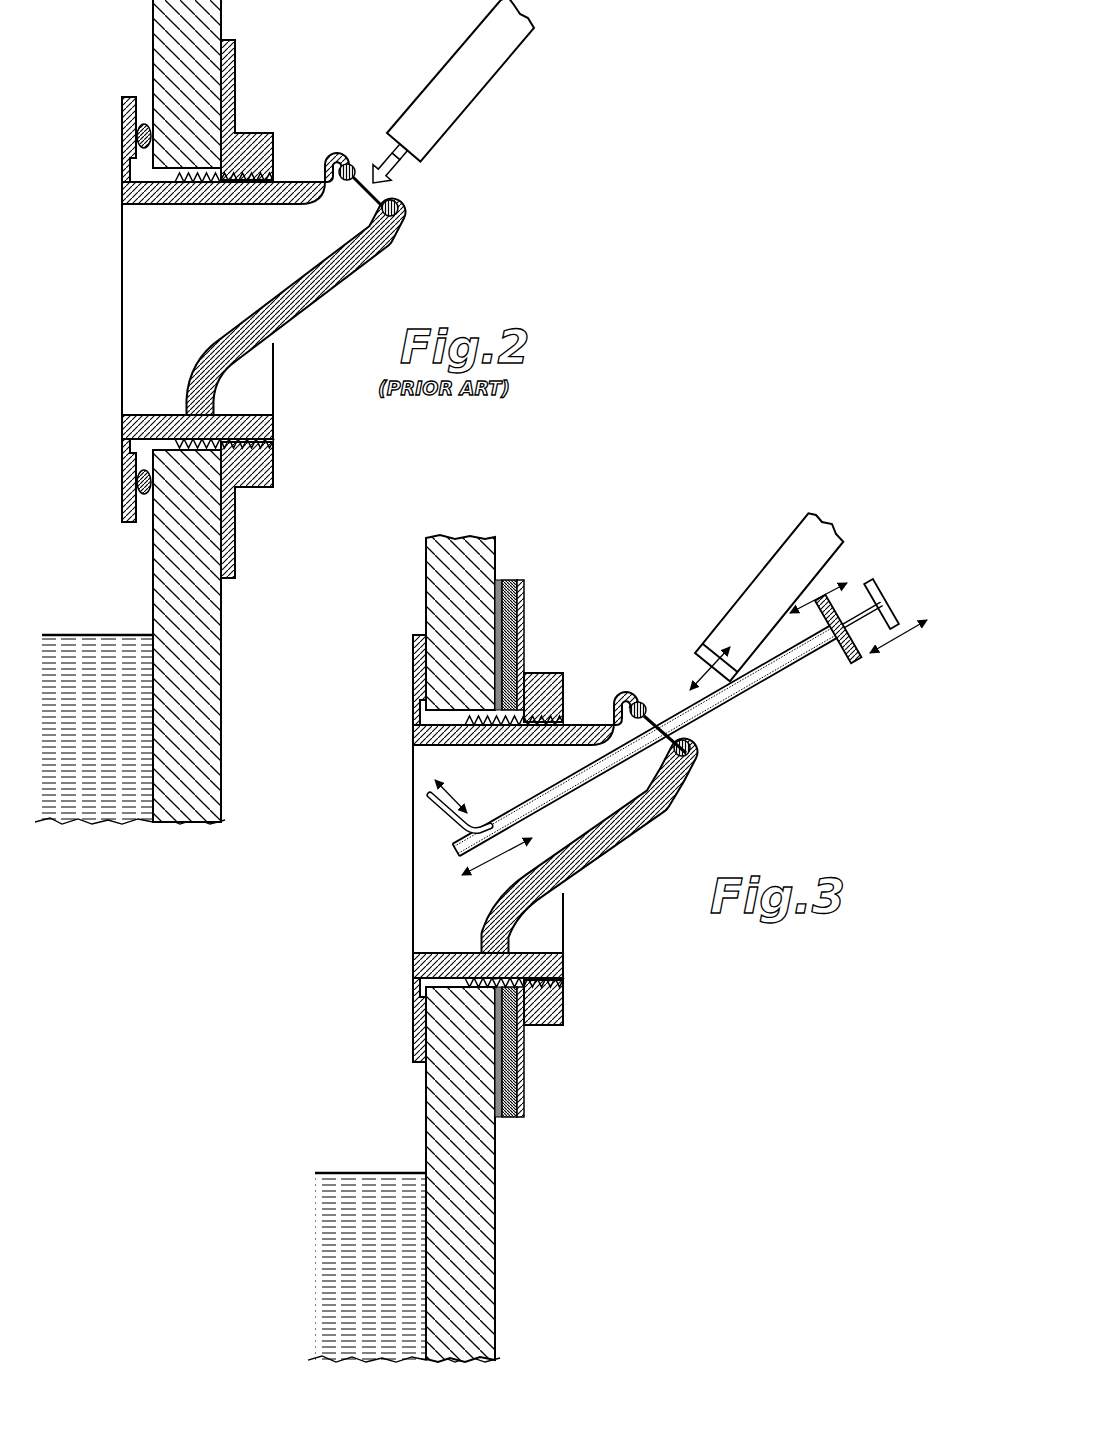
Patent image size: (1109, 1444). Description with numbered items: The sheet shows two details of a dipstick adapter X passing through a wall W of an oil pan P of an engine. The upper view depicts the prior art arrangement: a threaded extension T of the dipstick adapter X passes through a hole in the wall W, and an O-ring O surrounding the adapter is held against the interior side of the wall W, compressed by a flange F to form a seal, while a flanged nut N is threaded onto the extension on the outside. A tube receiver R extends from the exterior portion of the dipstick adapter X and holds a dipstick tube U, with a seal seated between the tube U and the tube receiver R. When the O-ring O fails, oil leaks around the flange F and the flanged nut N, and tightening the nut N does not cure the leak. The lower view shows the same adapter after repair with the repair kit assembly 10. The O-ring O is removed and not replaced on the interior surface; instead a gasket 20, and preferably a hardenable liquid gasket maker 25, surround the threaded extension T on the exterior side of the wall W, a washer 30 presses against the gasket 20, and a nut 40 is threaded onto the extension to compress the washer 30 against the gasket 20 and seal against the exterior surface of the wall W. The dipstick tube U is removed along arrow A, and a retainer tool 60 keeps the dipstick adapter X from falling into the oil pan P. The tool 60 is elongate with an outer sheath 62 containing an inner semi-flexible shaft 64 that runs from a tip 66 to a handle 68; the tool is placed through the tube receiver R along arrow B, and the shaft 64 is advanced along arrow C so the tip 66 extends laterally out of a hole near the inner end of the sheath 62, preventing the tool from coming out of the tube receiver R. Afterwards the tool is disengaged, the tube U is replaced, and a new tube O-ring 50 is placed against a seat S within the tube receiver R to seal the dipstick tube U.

In FIG. 2, the wall W is at (163, 35).
In FIG. 3, the wall W is at (452, 575).
In FIG. 2, the flange F is at (122, 108).
In FIG. 3, the flange F is at (413, 650).
In FIG. 2, the O-ring O is at (138, 137).
In FIG. 2, the flanged nut N is at (256, 138).
In FIG. 2, the threaded extension T is at (195, 197).
In FIG. 3, the threaded extension T is at (488, 746).
In FIG. 2, the arrow A is at (378, 150).
In FIG. 3, the arrow A is at (700, 662).
In FIG. 2, the dipstick tube U is at (468, 46).
In FIG. 3, the dipstick tube U is at (797, 536).
In FIG. 2, the seat S is at (393, 226).
In FIG. 3, the seat S is at (688, 773).
In FIG. 2, the tube receiver R is at (378, 266).
In FIG. 3, the tube receiver R is at (668, 812).
In FIG. 2, the dipstick adapter X is at (316, 406).
In FIG. 3, the dipstick adapter X is at (607, 946).
In FIG. 2, the oil pan P is at (130, 682).
In FIG. 3, the oil pan P is at (404, 1165).
In FIG. 3, the arrow B is at (825, 590).
In FIG. 3, the arrow C is at (918, 625).
In FIG. 3, the repair kit assembly 10 is at (656, 568).
In FIG. 3, the gasket 20 is at (508, 578).
In FIG. 3, the hardenable liquid gasket maker 25 is at (498, 578).
In FIG. 3, the washer 30 is at (519, 578).
In FIG. 3, the nut 40 is at (545, 674).
In FIG. 3, the tube O-ring 50 is at (703, 742).
In FIG. 3, the retainer tool 60 is at (815, 674).
In FIG. 3, the outer sheath 62 is at (808, 666).
In FIG. 3, the inner semi-flexible shaft 64 is at (606, 782).
In FIG. 3, the tip 66 is at (430, 800).
In FIG. 3, the handle 68 is at (880, 600).